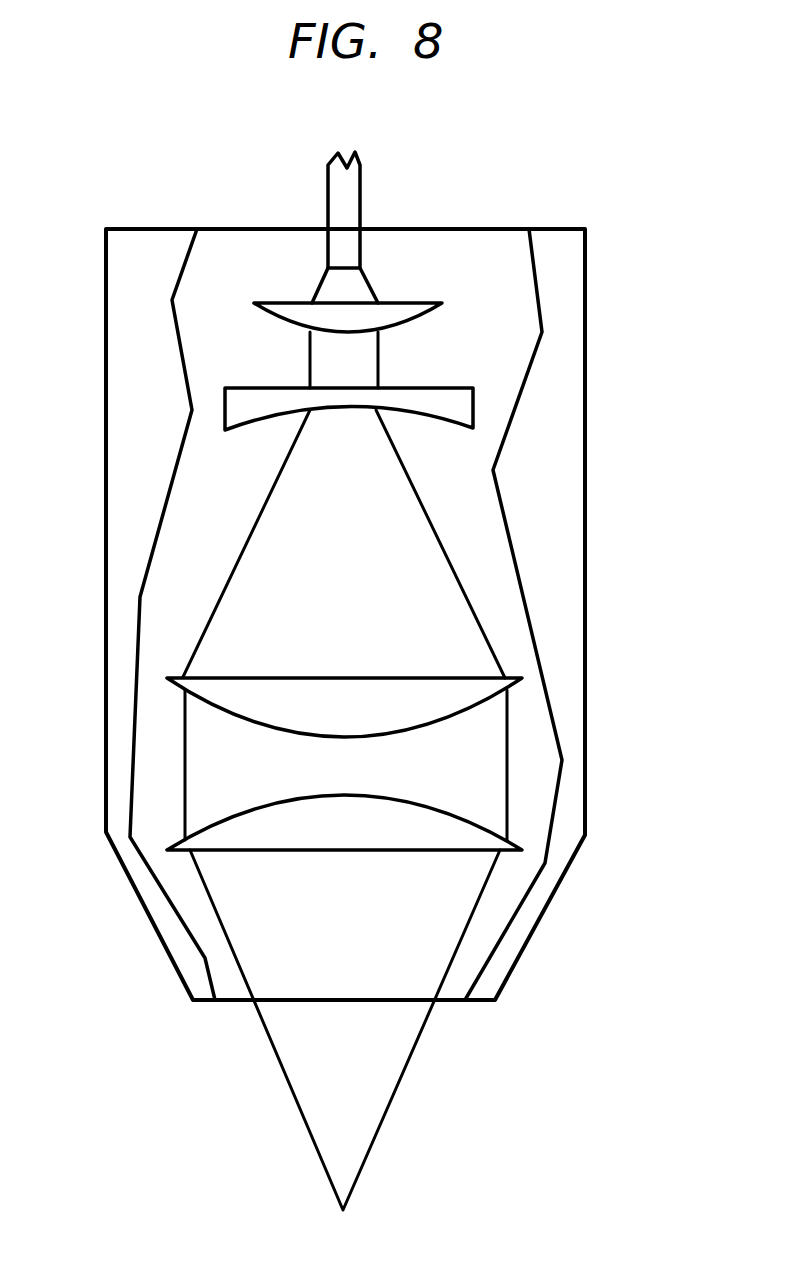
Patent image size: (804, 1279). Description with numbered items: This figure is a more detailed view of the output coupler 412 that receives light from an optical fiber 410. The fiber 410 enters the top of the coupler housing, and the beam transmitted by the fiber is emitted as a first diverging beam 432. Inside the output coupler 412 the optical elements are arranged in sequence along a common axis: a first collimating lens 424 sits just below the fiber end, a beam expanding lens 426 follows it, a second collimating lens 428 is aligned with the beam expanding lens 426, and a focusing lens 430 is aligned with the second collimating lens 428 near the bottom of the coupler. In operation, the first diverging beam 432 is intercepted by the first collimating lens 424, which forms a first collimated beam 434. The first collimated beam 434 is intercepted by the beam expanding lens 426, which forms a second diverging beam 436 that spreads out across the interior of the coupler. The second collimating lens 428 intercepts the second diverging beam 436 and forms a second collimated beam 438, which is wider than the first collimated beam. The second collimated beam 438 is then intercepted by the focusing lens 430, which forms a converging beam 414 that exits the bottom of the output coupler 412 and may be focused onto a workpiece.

The fiber 410 is at (363, 201).
The output coupler 412 is at (586, 571).
The beam 414 is at (398, 1092).
The first collimating lens 424 is at (410, 320).
The beam expanding lens 426 is at (443, 425).
The second collimating lens 428 is at (520, 686).
The focusing lens 430 is at (520, 848).
The first diverging beam 432 is at (372, 284).
The first collimated beam 434 is at (308, 352).
The second diverging beam 436 is at (258, 519).
The second collimated beam 438 is at (183, 738).